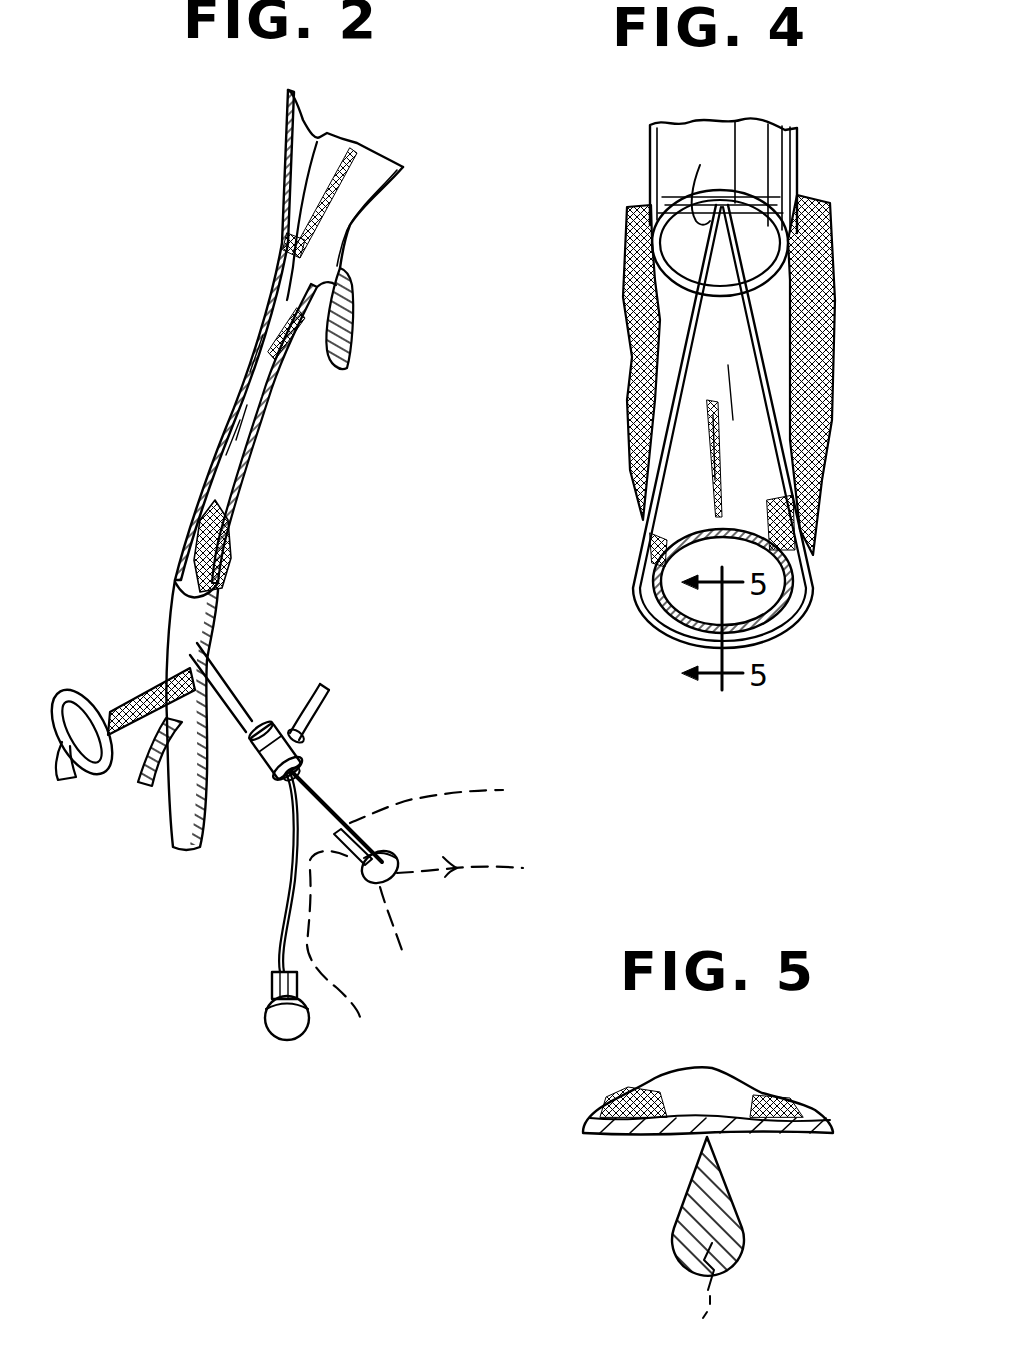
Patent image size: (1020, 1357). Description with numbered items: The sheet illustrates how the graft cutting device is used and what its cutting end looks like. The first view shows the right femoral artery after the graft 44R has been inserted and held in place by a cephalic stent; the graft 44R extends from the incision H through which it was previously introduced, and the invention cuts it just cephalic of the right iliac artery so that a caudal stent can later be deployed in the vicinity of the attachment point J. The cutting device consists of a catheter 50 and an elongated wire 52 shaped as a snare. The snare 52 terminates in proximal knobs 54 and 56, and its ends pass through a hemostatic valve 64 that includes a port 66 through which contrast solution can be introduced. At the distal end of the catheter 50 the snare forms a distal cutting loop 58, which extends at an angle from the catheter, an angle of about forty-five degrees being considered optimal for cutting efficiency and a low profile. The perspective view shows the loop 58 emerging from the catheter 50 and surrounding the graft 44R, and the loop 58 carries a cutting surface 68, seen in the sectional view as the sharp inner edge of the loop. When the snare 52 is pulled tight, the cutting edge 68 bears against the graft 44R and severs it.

In FIG. 2, the attachment point J is at (284, 239).
In FIG. 2, the incision H is at (183, 660).
In FIG. 2, the distal cutting loop 58 is at (206, 492).
In FIG. 4, the distal cutting loop 58 is at (812, 503).
In FIG. 2, the graft 44R is at (228, 562).
In FIG. 4, the graft 44R is at (633, 378).
In FIG. 5, the graft 44R is at (757, 1097).
In FIG. 2, the catheter 50 is at (227, 704).
In FIG. 4, the catheter 50 is at (785, 143).
In FIG. 2, the elongated wire 52 is at (317, 817).
In FIG. 4, the elongated wire 52 is at (691, 180).
In FIG. 5, the elongated wire 52 is at (690, 1289).
In FIG. 2, the proximal knob 54 is at (277, 1023).
In FIG. 2, the proximal knob 56 is at (387, 873).
In FIG. 2, the hemostatic valve 64 is at (265, 775).
In FIG. 2, the port 66 is at (307, 741).
In FIG. 4, the cutting surface 68 is at (657, 608).
In FIG. 5, the cutting surface 68 is at (713, 1188).